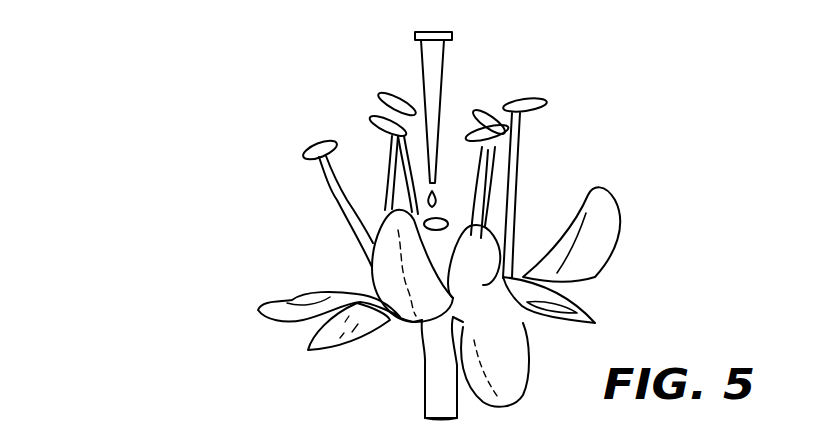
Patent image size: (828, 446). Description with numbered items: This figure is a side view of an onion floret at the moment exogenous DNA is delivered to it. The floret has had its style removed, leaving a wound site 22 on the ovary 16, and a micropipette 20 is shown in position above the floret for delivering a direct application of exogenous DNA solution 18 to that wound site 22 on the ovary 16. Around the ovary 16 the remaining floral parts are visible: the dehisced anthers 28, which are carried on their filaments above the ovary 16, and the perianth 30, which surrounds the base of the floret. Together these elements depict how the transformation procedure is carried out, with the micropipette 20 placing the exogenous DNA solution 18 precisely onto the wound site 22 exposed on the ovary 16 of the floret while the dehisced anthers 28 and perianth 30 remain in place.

The ovary 16 is at (441, 243).
The exogenous DNA solution 18 is at (428, 201).
The micropipette 20 is at (433, 73).
The wound site 22 is at (440, 219).
The dehisced anther 28 is at (313, 150).
The perianth 30 is at (312, 338).